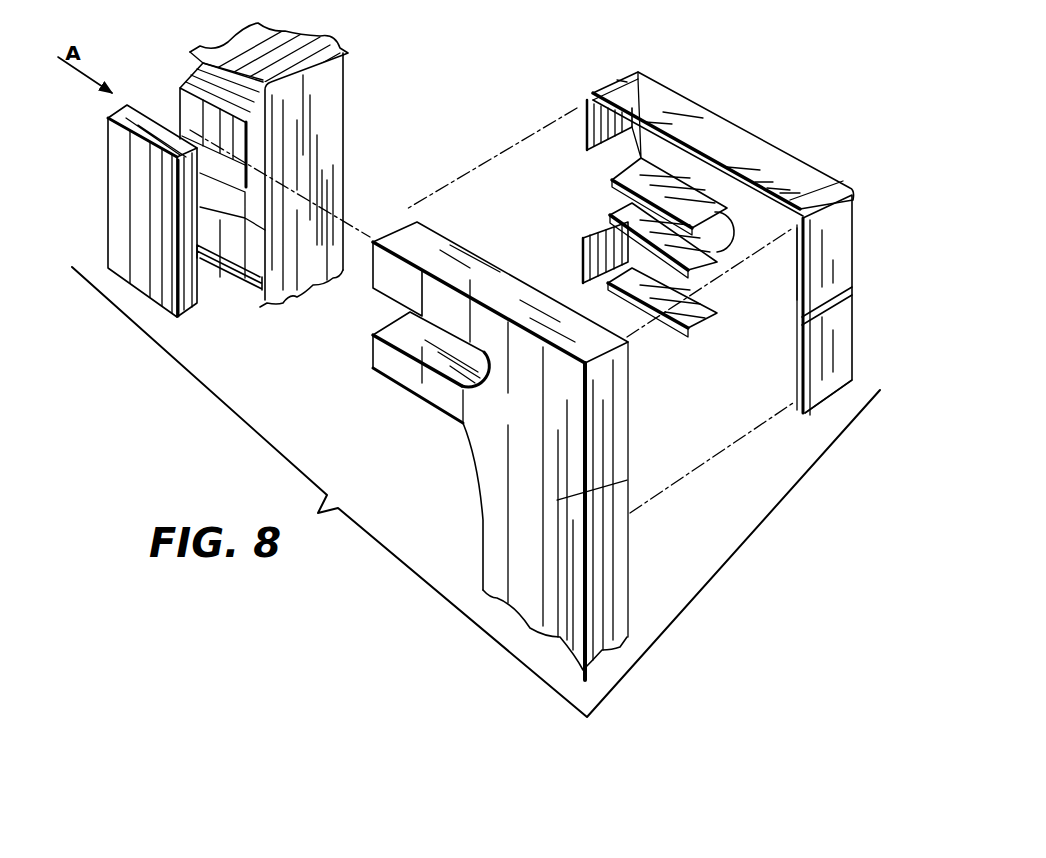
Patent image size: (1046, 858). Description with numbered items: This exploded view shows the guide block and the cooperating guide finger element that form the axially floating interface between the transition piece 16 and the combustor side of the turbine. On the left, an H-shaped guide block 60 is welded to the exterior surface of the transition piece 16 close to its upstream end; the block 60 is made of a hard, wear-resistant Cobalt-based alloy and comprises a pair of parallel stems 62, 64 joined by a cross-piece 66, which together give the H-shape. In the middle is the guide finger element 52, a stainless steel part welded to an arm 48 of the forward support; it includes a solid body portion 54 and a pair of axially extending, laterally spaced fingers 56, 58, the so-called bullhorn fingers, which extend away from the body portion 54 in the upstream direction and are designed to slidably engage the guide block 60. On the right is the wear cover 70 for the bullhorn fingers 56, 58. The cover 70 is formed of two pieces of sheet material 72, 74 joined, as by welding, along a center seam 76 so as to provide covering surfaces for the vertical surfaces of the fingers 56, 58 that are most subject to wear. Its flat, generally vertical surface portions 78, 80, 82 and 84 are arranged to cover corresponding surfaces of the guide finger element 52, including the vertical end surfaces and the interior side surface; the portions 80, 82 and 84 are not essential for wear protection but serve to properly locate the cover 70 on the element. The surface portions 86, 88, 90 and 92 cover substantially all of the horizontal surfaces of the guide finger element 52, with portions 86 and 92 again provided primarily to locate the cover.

The transition piece 16 is at (330, 195).
The arm 48 is at (495, 572).
The guide finger element 52 is at (457, 425).
The body portion 54 is at (494, 419).
The finger 56 is at (473, 260).
The finger 58 is at (383, 355).
The H-shaped guide block 60 is at (100, 252).
The stem 62 is at (120, 205).
The stem 64 is at (257, 143).
The cross-piece 66 is at (222, 222).
The wear cover 70 is at (797, 150).
The piece of sheet material 72 is at (852, 277).
The piece of sheet material 74 is at (852, 353).
The center seam 76 is at (782, 267).
The vertical surface portion 78 is at (777, 220).
The vertical surface portion 80 is at (583, 127).
The vertical surface portion 82 is at (592, 238).
The vertical surface portion 84 is at (830, 242).
The surface portion 86 is at (760, 150).
The surface portion 88 is at (653, 178).
The surface portion 90 is at (735, 236).
The surface portion 92 is at (703, 323).